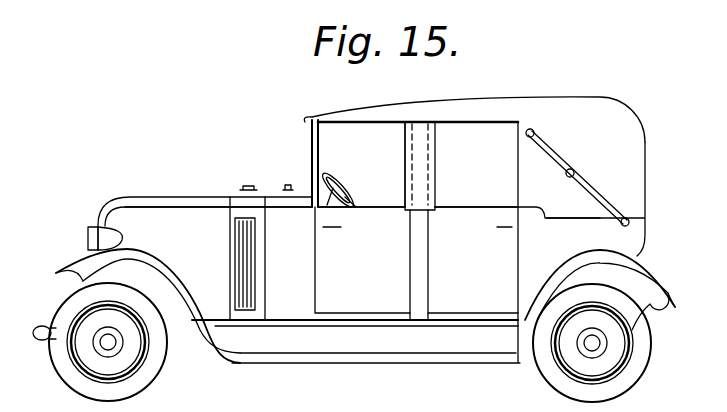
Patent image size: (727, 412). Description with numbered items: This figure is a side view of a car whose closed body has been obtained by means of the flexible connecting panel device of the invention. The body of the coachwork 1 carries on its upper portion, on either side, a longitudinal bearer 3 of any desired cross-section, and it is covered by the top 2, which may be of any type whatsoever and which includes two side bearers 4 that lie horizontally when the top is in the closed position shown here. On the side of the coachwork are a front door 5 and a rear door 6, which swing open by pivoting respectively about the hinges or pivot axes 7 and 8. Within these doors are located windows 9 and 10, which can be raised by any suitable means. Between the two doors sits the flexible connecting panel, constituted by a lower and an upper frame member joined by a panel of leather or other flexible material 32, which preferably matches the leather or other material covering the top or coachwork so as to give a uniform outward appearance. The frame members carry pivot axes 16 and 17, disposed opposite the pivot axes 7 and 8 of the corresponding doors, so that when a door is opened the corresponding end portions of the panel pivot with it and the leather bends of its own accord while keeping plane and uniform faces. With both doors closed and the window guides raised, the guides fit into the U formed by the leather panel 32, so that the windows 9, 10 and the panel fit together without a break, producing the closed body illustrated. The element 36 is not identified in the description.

The body of the coachwork 1 is at (528, 237).
The top 2 is at (533, 105).
The longitudinal bearer 3 is at (418, 212).
The side bearer 4 is at (480, 122).
The front door 5 is at (352, 290).
The rear door 6 is at (472, 285).
The hinge or pivot axis 7 is at (410, 300).
The hinge or pivot axis 8 is at (430, 300).
The window 9 is at (358, 130).
The window 10 is at (503, 158).
The pivot axis 16 is at (418, 172).
The pivot axis 17 is at (433, 166).
The leather panel 32 is at (420, 145).
The windshield post 36 is at (328, 119).